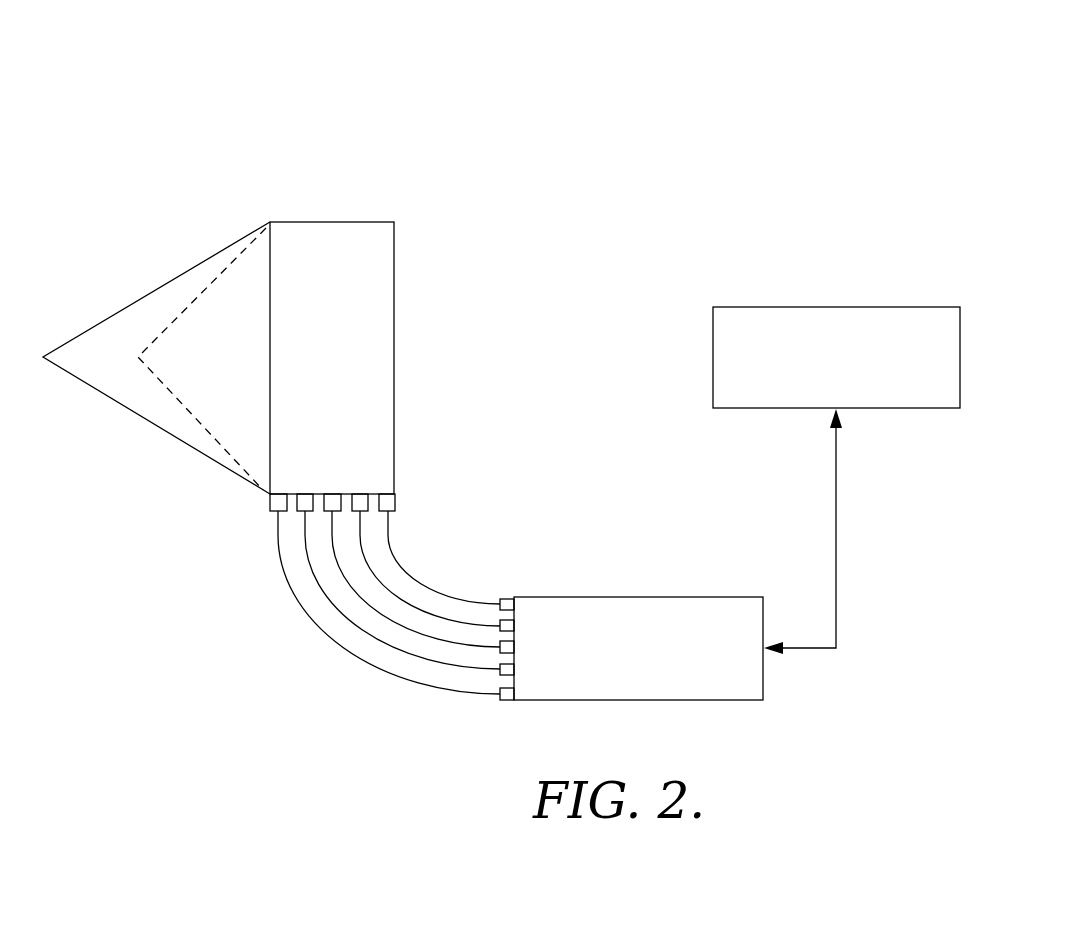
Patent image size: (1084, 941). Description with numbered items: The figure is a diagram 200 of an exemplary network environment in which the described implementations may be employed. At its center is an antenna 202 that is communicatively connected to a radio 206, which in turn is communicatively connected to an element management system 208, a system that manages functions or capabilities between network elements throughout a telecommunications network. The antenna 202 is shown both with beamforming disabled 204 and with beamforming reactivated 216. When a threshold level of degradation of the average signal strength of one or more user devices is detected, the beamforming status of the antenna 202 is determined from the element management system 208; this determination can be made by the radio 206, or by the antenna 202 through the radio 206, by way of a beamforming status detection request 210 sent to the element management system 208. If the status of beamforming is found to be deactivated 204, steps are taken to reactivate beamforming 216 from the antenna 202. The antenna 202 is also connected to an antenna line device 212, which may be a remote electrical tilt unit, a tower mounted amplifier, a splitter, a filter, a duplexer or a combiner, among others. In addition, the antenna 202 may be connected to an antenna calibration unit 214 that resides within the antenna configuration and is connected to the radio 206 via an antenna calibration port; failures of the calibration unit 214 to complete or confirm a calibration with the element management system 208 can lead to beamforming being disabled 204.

The diagram 200 is at (646, 57).
The antenna 202 is at (358, 222).
The beamforming disabled 204 is at (180, 308).
The radio 206 is at (635, 597).
The element management system 208 is at (866, 307).
The beamforming status detection request 210 is at (837, 505).
The antenna line device 212 is at (269, 508).
The antenna calibration unit 214 is at (397, 502).
The reactivate beamforming 216 is at (146, 296).